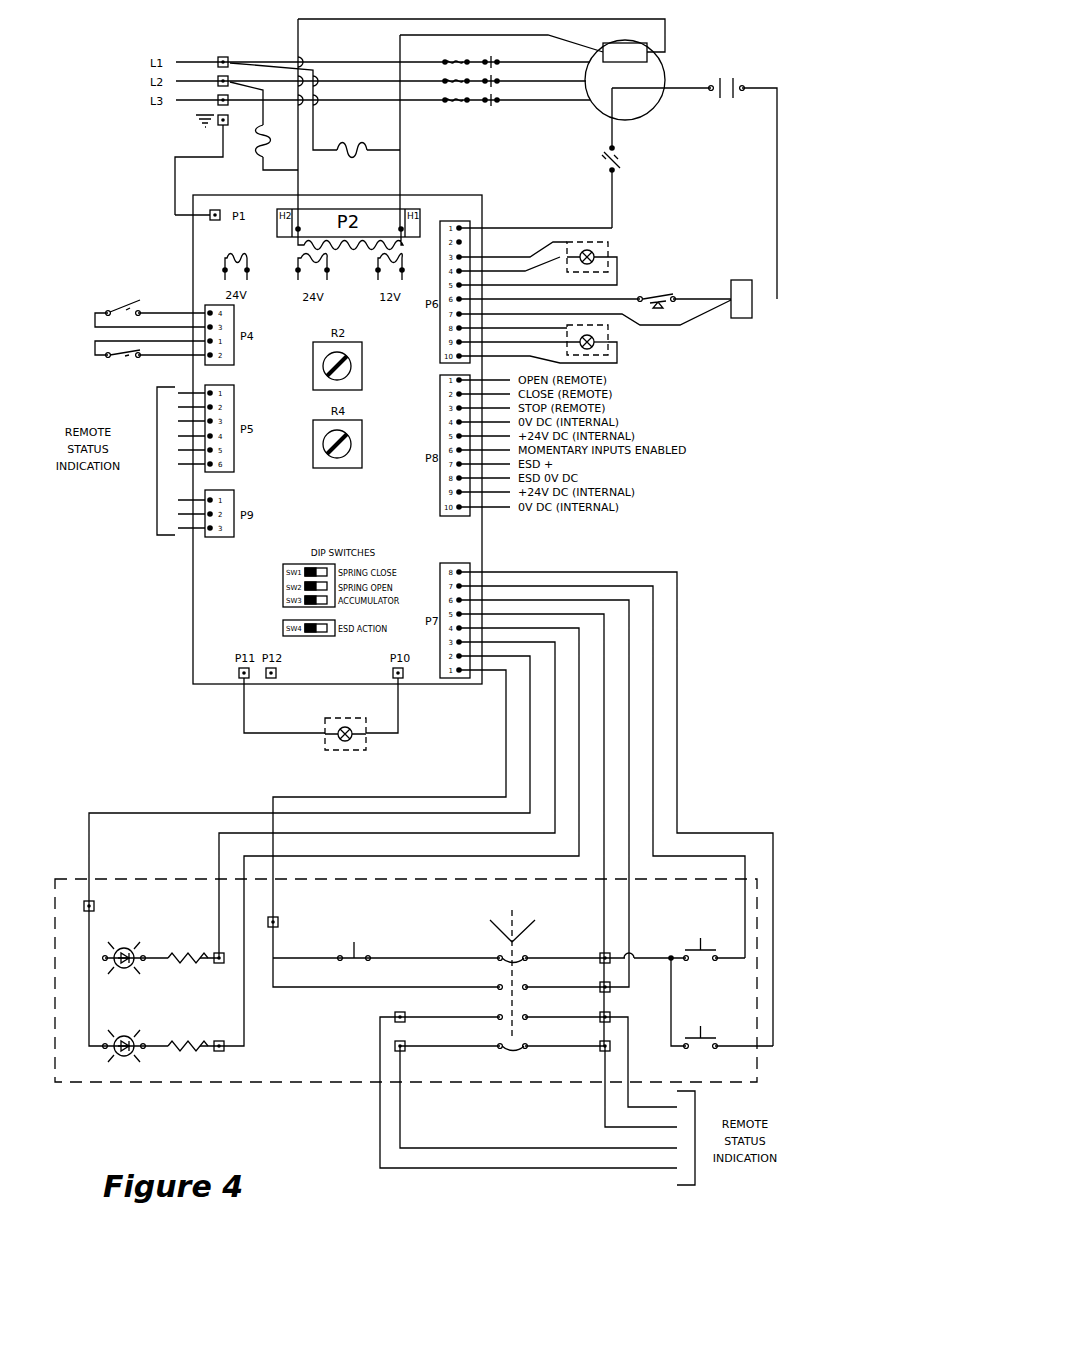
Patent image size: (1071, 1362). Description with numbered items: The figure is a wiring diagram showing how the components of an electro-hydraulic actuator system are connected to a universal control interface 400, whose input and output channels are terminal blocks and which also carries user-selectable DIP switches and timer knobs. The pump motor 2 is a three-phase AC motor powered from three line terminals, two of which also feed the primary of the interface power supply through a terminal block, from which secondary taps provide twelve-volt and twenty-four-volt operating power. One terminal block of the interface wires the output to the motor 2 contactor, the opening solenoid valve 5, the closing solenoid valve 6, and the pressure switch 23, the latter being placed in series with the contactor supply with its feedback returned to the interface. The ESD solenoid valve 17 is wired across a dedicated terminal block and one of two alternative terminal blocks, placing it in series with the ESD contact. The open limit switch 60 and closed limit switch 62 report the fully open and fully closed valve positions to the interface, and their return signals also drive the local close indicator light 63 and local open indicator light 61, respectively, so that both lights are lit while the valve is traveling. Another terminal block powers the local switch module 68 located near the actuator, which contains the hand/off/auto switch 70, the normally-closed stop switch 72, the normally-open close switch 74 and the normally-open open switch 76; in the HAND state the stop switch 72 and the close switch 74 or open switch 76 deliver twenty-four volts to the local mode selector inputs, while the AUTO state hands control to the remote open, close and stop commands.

The pump motor 2 is at (664, 72).
The control interface 400 is at (447, 168).
The opening solenoid valve 5 is at (618, 251).
The closing solenoid valve 6 is at (620, 331).
The pressure switch 23 is at (660, 294).
The open limit switch 60 is at (116, 301).
The closed limit switch 62 is at (127, 372).
The ESD solenoid valve 17 is at (346, 721).
The local switch module 68 is at (140, 877).
The local close indicator light 63 is at (130, 933).
The local open indicator light 61 is at (130, 1020).
The stop switch 72 is at (350, 919).
The hand/off/auto switch 70 is at (439, 928).
The close switch 74 is at (701, 918).
The open switch 76 is at (701, 1002).